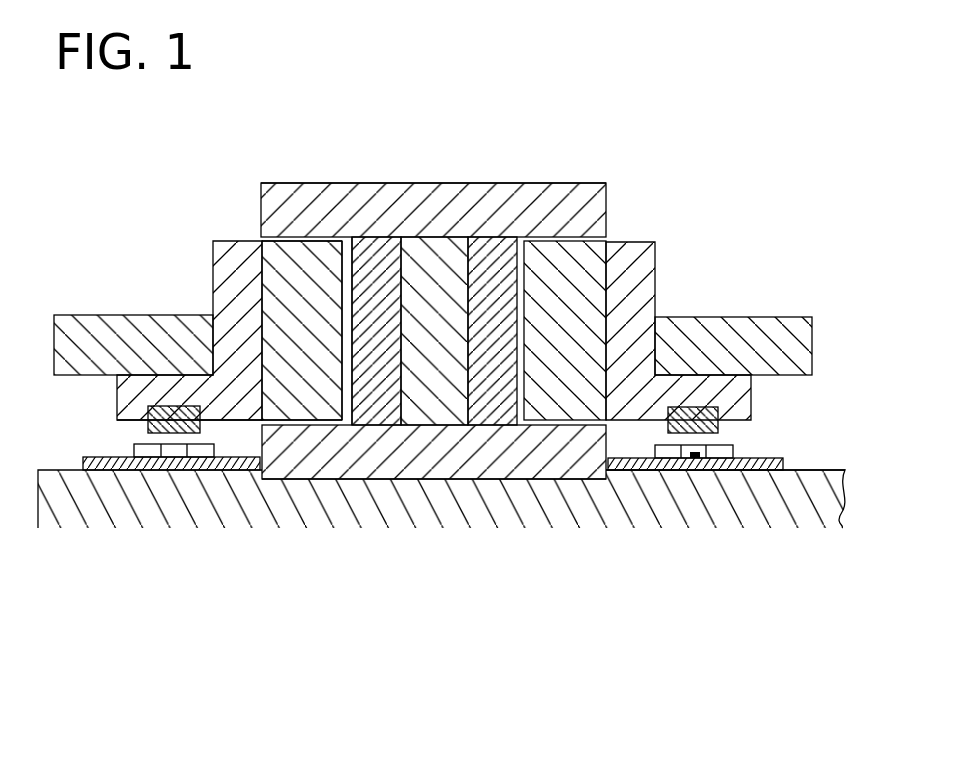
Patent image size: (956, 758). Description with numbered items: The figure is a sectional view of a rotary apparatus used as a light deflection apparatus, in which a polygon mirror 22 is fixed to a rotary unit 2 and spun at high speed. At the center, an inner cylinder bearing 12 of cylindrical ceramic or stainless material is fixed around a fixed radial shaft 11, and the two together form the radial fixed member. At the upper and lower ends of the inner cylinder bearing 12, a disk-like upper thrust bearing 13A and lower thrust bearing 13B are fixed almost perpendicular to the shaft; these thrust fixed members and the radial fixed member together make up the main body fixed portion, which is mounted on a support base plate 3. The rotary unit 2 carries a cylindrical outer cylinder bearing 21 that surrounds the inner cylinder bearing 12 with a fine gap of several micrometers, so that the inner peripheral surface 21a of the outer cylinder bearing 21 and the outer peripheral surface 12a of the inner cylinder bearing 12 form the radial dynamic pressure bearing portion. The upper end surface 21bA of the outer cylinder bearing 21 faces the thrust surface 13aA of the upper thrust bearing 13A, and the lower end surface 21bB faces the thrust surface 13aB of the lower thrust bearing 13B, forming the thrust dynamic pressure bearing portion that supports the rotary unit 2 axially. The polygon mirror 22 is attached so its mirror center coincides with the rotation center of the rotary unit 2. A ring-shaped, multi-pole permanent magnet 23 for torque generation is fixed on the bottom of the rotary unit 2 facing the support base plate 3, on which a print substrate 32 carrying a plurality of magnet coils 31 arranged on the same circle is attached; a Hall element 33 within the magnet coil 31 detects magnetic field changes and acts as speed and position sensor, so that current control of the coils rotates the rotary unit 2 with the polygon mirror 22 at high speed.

The rotary unit 2 is at (713, 293).
The support base plate 3 is at (803, 493).
The radial shaft 11 is at (430, 253).
The inner cylinder bearing 12 is at (492, 253).
The outer peripheral surface of the inner cylinder bearing 12a is at (342, 402).
The upper thrust bearing 13A is at (597, 207).
The lower thrust bearing 13B is at (497, 462).
The thrust surface of the upper thrust bearing 13aA is at (286, 238).
The thrust surface of the lower thrust bearing 13aB is at (263, 418).
The outer cylinder bearing 21 is at (596, 280).
The inner peripheral surface of the outer cylinder bearing 21a is at (341, 362).
The upper end surface of the outer cylinder bearing 21bA is at (286, 242).
The lower end surface of the outer cylinder bearing 21bB is at (297, 421).
The polygon mirror 22 is at (800, 340).
The permanent magnet 23 is at (719, 427).
The magnet coil 31 is at (718, 459).
The print substrate 32 is at (763, 472).
The Hall element 33 is at (697, 459).